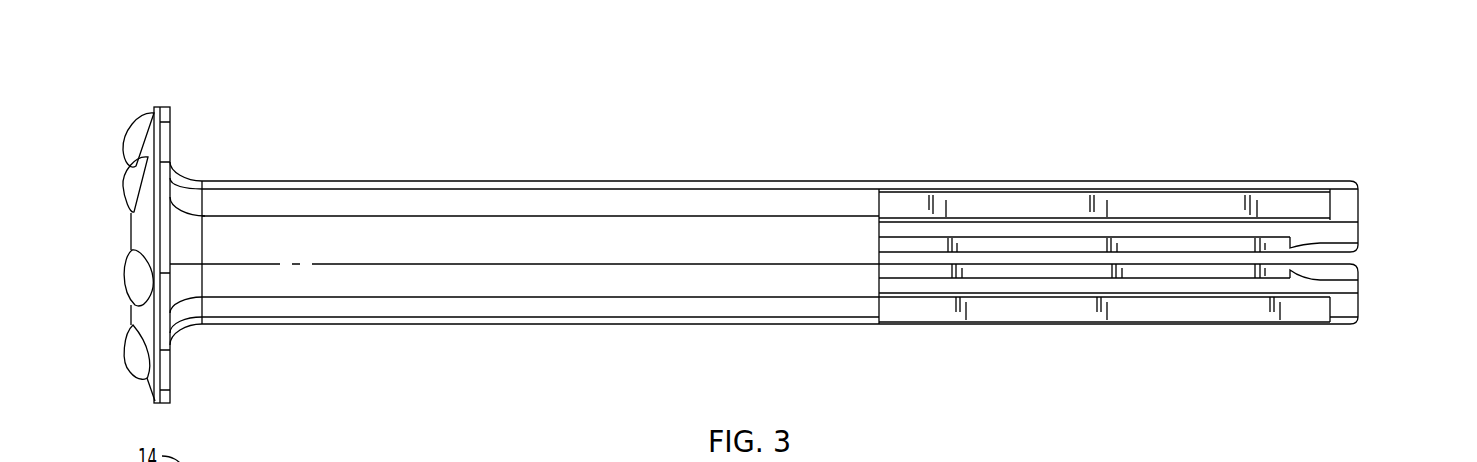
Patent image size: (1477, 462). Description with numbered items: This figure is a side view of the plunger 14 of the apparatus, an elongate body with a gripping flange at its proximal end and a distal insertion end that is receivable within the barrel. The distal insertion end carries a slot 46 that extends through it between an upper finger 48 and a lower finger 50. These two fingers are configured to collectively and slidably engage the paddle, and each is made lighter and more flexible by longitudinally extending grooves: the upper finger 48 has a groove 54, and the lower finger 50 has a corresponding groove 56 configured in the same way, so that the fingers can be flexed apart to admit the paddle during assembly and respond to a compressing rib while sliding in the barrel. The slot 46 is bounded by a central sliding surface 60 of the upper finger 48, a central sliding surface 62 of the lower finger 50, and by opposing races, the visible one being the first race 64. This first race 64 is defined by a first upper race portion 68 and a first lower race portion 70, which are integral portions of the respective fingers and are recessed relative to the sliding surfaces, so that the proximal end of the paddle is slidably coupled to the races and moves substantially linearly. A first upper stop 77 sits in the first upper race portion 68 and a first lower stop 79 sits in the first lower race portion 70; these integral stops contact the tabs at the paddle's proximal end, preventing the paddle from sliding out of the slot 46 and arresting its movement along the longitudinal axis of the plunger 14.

The plunger 14 is at (226, 121).
The slot 46 is at (1195, 258).
The upper finger 48 is at (1363, 210).
The lower finger 50 is at (1363, 304).
The groove 54 is at (1145, 208).
The groove 56 is at (1188, 305).
The central sliding surface 60 is at (1067, 252).
The central sliding surface 62 is at (1073, 263).
The first race 64 is at (925, 256).
The first upper race portion 68 is at (989, 242).
The first lower race portion 70 is at (995, 270).
The first upper stop 77 is at (1295, 243).
The first lower stop 79 is at (1358, 280).